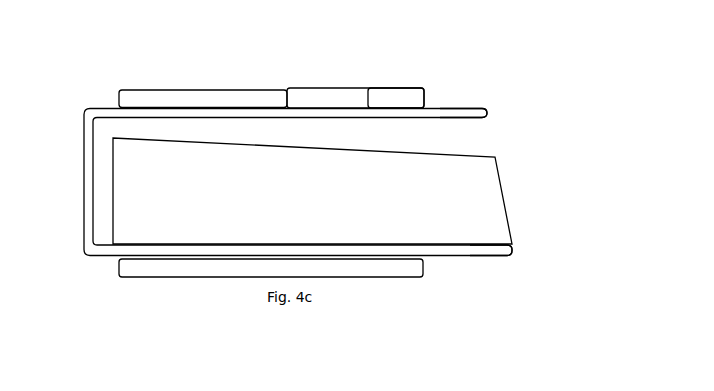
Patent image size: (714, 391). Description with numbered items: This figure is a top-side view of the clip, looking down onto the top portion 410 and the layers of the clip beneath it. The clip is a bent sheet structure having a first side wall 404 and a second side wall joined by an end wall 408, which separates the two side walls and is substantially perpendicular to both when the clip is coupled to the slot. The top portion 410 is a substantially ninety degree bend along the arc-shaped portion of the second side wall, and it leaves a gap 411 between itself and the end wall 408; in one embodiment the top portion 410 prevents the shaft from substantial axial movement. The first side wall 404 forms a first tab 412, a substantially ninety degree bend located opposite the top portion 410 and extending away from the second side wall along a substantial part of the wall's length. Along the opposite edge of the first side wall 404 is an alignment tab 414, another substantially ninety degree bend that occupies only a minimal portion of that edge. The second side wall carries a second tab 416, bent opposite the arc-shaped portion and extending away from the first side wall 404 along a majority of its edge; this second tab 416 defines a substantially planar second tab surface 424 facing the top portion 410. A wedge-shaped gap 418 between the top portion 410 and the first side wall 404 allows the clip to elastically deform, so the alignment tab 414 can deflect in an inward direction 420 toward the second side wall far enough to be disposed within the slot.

The first side wall 404 is at (460, 116).
The end wall 408 is at (470, 256).
The top portion 410 is at (228, 208).
The gap 411 is at (101, 214).
The first tab 412 is at (76, 5).
The alignment tab 414 is at (330, 99).
The second tab 416 is at (183, 278).
The wedge-shaped gap 418 is at (468, 140).
The inward direction 420 is at (326, 134).
The second tab surface 424 is at (373, 263).